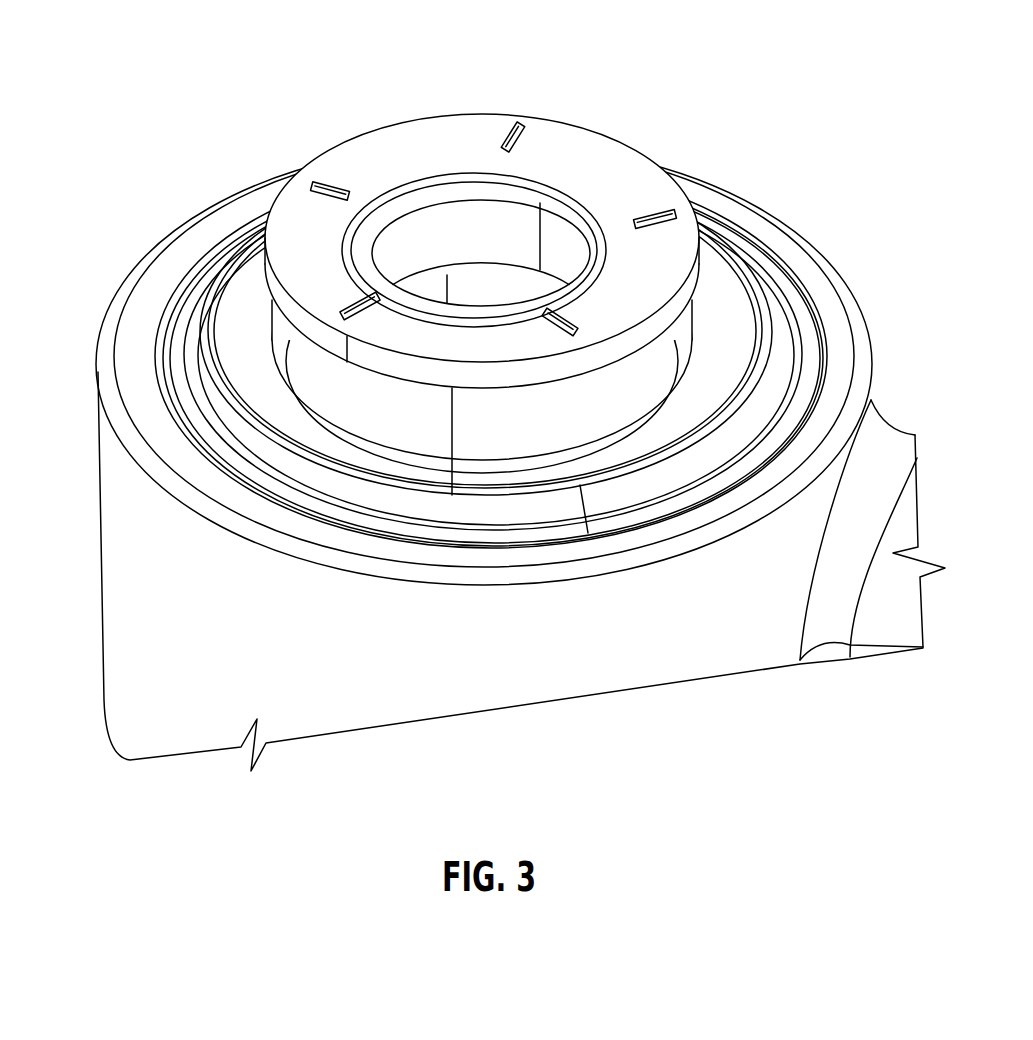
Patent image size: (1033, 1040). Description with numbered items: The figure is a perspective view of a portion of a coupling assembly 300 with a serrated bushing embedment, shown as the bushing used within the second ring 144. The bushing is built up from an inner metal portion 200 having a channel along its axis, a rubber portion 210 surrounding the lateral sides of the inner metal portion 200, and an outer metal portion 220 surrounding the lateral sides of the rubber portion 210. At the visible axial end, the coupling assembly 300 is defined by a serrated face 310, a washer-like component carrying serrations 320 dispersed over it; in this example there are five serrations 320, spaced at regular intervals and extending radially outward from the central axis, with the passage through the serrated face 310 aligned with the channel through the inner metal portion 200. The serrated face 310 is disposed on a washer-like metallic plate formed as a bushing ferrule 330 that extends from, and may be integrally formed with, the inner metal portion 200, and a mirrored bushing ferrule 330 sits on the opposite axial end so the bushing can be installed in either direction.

The second ring 144 is at (120, 606).
The inner metal portion 200 is at (457, 290).
The rubber portion 210 is at (266, 348).
The outer metal portion 220 is at (198, 383).
The coupling assembly 300 is at (482, 334).
The serrated face 310 is at (451, 150).
The serrations 320 is at (515, 120).
The bushing ferrule 330 is at (447, 373).